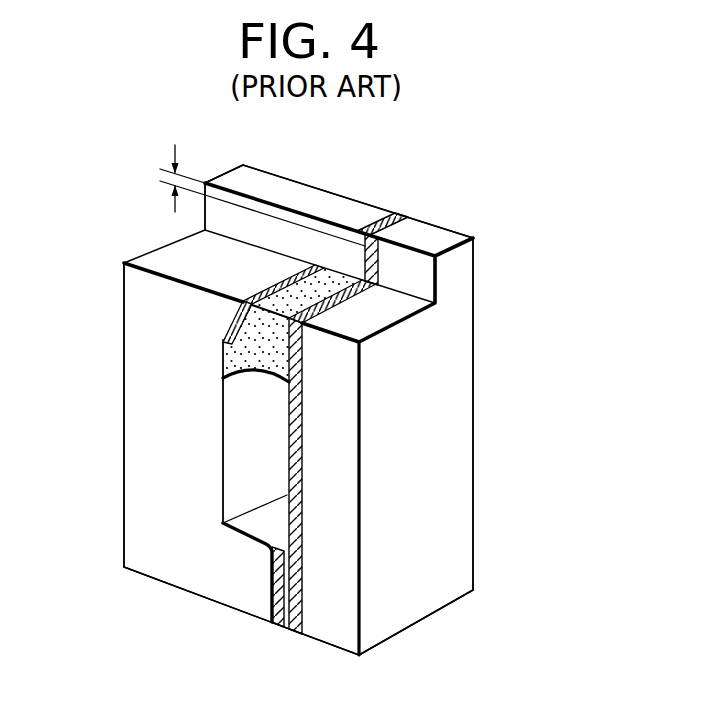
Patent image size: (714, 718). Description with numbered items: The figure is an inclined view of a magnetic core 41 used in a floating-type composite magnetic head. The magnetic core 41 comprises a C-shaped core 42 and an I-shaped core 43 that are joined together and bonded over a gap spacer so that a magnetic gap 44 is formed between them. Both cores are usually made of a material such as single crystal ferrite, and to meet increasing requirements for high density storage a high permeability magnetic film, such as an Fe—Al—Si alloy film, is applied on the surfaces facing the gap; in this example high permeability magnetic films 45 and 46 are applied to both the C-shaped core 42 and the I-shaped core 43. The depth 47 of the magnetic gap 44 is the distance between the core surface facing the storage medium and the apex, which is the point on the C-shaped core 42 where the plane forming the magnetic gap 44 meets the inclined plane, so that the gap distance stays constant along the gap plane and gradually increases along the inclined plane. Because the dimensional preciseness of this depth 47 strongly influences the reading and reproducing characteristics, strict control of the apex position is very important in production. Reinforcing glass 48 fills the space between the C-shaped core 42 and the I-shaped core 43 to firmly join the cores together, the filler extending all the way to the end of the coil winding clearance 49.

The magnetic core 41 is at (503, 282).
The C-shaped core 42 is at (163, 553).
The I-shaped core 43 is at (452, 478).
The magnetic gap 44 is at (394, 214).
The high permeability magnetic film 45 is at (382, 212).
The high permeability magnetic film 46 is at (412, 213).
The depth of the magnetic gap 47 is at (165, 171).
The reinforcing glass 48 is at (222, 360).
The coil winding clearance 49 is at (243, 463).